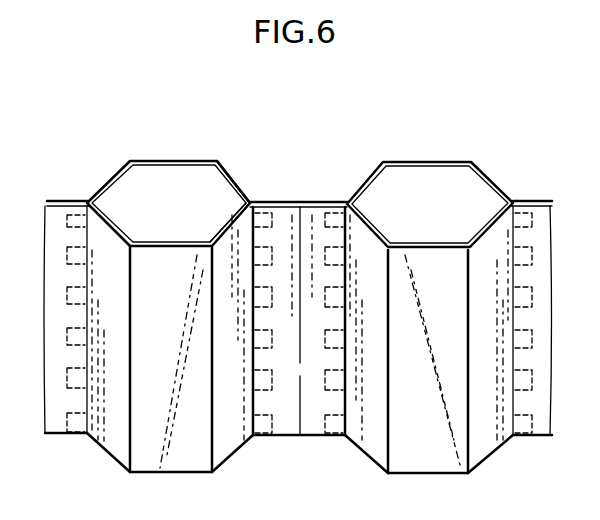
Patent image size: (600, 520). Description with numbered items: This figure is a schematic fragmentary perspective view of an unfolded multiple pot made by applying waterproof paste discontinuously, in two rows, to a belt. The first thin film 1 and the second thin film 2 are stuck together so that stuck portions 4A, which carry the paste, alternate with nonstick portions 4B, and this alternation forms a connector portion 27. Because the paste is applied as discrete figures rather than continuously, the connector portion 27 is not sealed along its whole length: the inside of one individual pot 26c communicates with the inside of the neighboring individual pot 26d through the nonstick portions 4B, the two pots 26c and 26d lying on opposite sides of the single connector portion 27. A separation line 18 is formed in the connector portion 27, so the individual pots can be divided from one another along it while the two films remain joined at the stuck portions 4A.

The individual pot 26c is at (148, 173).
The individual pot 26d is at (449, 174).
The first thin film 1 is at (233, 182).
The second thin film 2 is at (231, 224).
The connector portion 27 is at (292, 202).
The stuck portion 4A is at (255, 297).
The nonstick portion 4B is at (258, 320).
The separation line 18 is at (305, 419).